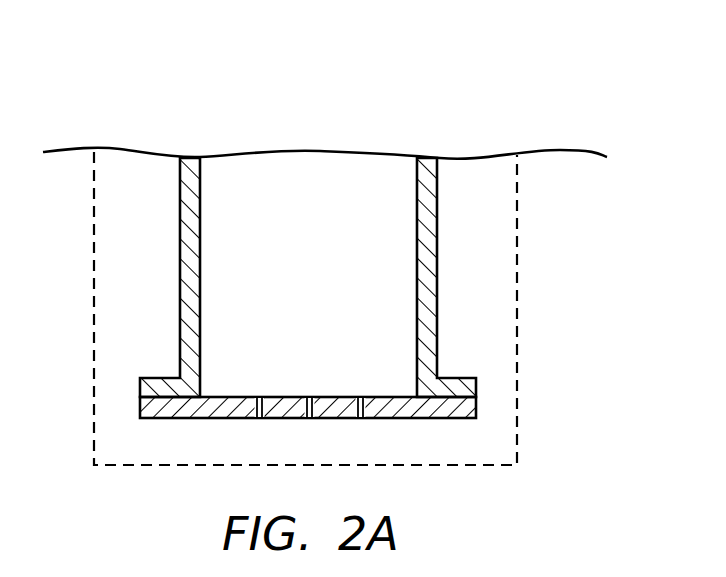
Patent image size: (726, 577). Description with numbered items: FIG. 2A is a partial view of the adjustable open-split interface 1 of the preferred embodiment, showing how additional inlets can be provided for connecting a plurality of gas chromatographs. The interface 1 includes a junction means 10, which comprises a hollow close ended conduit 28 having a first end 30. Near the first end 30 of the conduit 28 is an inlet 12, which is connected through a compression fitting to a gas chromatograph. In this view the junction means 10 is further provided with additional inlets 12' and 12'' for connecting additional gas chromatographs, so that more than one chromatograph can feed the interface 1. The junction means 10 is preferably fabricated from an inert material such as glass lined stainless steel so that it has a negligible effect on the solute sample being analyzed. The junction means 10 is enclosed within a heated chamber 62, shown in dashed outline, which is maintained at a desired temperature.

The adjustable open-split interface 1 is at (394, 130).
The junction means 10 is at (455, 284).
The inlet 12 is at (201, 430).
The additional inlet 12' is at (284, 431).
The additional inlet 12'' is at (394, 431).
The hollow close ended conduit 28 is at (180, 230).
The first end 30 is at (476, 397).
The heated chamber 62 is at (517, 313).